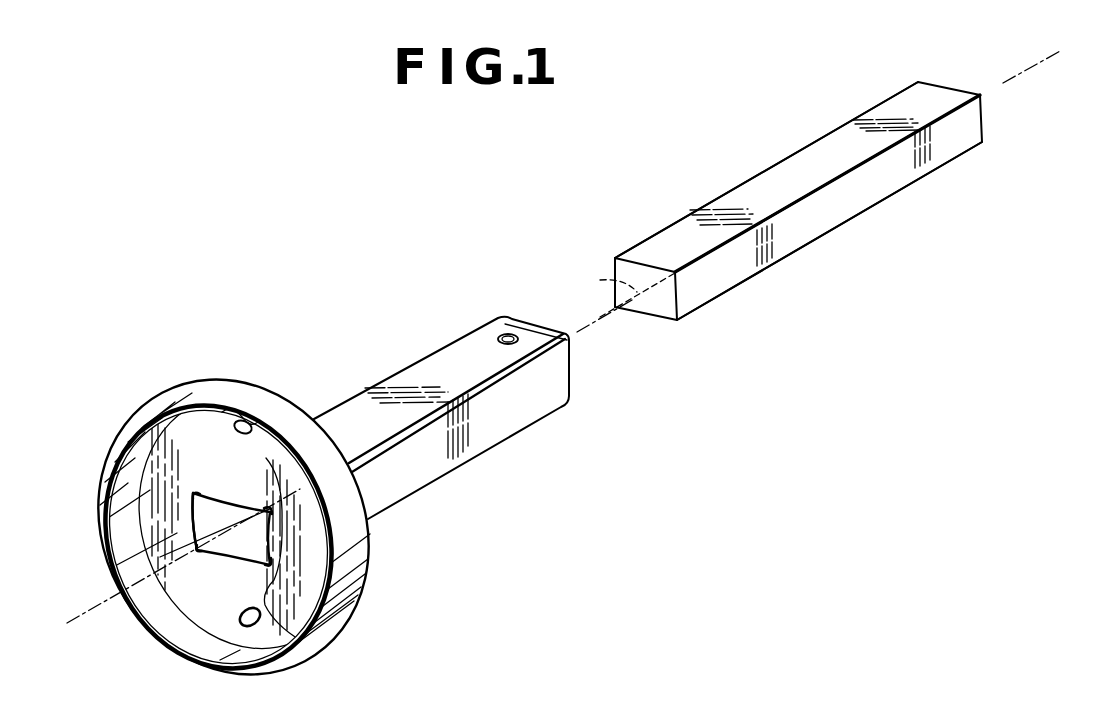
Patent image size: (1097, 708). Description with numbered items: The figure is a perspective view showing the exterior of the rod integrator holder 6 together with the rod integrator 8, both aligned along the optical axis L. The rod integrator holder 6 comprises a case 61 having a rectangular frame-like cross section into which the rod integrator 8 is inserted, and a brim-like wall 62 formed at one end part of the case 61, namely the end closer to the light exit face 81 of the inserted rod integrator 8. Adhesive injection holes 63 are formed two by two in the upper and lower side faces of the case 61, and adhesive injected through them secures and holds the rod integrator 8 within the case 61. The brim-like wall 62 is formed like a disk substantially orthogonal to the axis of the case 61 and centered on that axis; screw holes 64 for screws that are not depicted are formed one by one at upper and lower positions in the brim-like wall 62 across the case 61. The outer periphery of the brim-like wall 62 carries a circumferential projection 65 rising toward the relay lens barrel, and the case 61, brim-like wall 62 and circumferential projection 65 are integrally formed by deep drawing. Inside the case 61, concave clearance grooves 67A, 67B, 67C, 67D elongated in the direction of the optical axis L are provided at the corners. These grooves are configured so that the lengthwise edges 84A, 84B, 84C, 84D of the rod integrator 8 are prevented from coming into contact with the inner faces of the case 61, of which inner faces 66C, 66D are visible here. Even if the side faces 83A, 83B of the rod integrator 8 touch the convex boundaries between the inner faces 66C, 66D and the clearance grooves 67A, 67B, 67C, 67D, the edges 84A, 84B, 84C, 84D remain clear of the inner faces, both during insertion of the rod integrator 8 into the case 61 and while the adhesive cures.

The optical axis L is at (96, 611).
The rod integrator holder 6 is at (306, 492).
The case 61 is at (430, 380).
The brim-like wall 62 is at (210, 610).
The adhesive injection holes 63 is at (510, 334).
The screw holes 64 is at (220, 410).
The circumferential projection 65 is at (358, 563).
The inner face 66C is at (237, 547).
The inner face 66D is at (185, 533).
The clearance groove 67A is at (272, 511).
The clearance groove 67B is at (303, 632).
The clearance groove 67C is at (193, 548).
The clearance groove 67D is at (193, 492).
The rod integrator 8 is at (772, 209).
The light exit face 81 is at (660, 300).
The side face 83A is at (893, 108).
The side face 83B is at (893, 170).
The edge 84A is at (790, 203).
The edge 84B is at (750, 280).
The edge 84C is at (615, 282).
The edge 84D is at (720, 198).